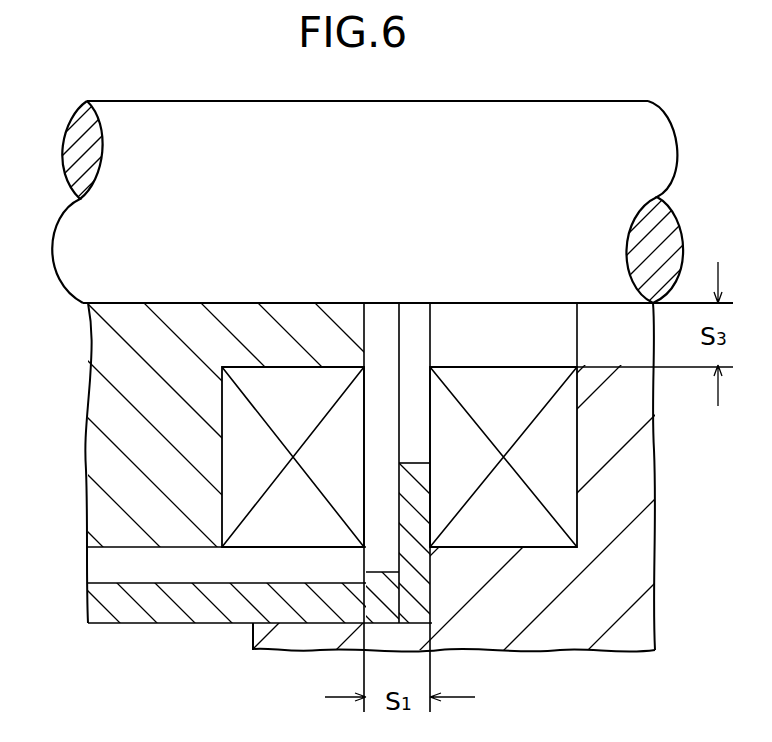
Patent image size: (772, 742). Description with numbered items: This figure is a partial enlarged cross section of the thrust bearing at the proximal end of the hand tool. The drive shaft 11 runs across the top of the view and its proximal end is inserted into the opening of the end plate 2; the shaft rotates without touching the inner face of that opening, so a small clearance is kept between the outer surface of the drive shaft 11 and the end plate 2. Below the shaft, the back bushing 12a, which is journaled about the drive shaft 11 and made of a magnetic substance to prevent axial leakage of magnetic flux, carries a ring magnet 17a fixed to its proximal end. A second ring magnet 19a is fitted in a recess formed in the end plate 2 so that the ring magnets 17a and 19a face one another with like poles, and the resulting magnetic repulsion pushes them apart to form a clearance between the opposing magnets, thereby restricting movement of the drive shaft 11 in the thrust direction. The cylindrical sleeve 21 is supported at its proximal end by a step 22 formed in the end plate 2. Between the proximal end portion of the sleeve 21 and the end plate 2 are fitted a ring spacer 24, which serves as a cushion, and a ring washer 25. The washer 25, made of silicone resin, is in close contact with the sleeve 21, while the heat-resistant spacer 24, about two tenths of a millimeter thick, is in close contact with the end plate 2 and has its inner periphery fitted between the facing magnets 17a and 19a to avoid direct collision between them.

The drive shaft 11 is at (660, 185).
The back bushing 12a is at (92, 388).
The ring magnet 17a is at (280, 380).
The second ring magnet 19a is at (517, 376).
The end plate 2 is at (645, 482).
The cylindrical sleeve 21 is at (160, 624).
The step 22 is at (430, 612).
The ring spacer 24 is at (415, 490).
The ring washer 25 is at (372, 578).